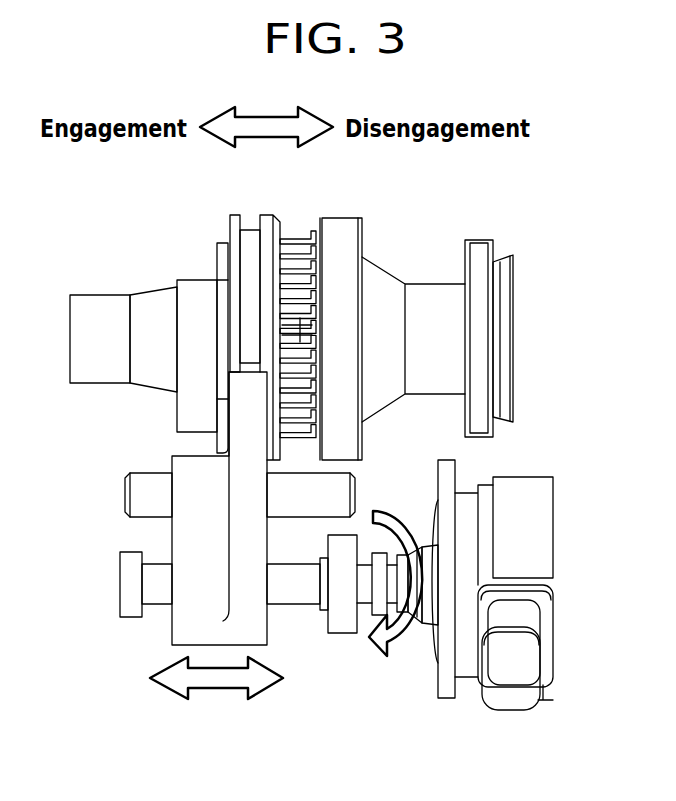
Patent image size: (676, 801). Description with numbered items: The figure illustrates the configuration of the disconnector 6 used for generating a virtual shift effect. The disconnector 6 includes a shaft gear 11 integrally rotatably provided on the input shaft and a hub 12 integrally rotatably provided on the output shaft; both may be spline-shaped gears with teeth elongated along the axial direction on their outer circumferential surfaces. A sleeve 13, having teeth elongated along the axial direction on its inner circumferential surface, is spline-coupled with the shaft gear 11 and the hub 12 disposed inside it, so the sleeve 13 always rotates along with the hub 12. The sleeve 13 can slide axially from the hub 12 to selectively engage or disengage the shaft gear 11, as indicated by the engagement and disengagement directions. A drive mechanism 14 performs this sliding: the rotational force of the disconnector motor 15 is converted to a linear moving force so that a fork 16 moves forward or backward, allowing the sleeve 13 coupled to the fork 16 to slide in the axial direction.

The disconnector 6 is at (416, 234).
The shaft gear 11 is at (227, 240).
The hub 12 is at (302, 238).
The sleeve 13 is at (260, 242).
The drive mechanism 14 is at (363, 681).
The disconnector motor 15 is at (537, 523).
The fork 16 is at (187, 540).